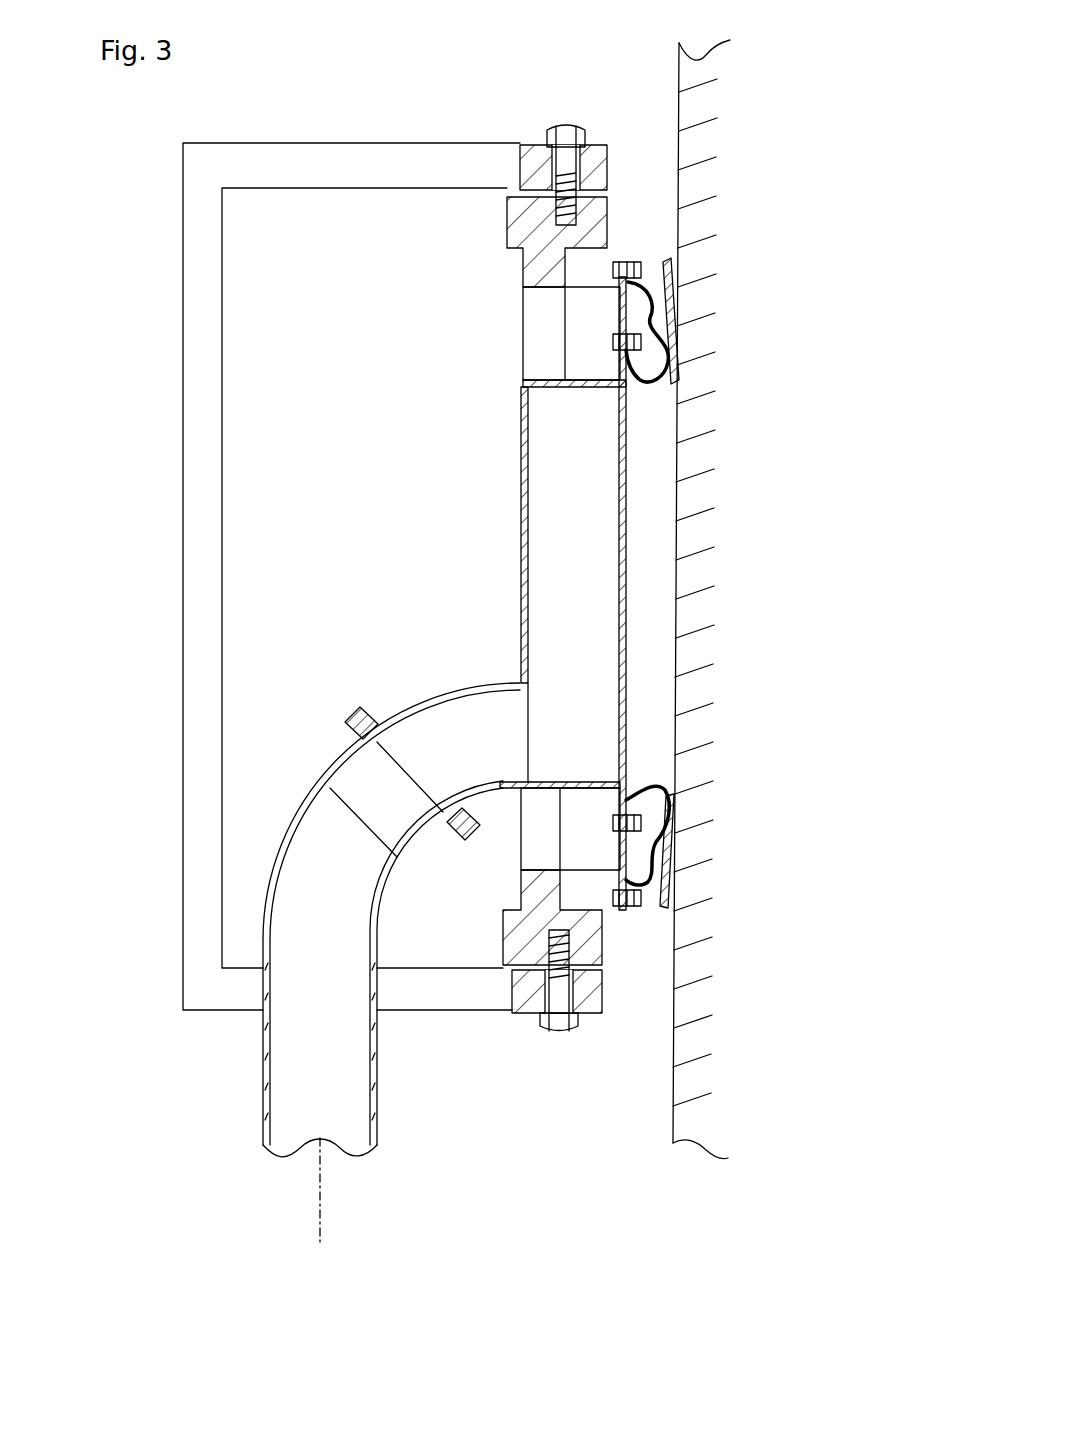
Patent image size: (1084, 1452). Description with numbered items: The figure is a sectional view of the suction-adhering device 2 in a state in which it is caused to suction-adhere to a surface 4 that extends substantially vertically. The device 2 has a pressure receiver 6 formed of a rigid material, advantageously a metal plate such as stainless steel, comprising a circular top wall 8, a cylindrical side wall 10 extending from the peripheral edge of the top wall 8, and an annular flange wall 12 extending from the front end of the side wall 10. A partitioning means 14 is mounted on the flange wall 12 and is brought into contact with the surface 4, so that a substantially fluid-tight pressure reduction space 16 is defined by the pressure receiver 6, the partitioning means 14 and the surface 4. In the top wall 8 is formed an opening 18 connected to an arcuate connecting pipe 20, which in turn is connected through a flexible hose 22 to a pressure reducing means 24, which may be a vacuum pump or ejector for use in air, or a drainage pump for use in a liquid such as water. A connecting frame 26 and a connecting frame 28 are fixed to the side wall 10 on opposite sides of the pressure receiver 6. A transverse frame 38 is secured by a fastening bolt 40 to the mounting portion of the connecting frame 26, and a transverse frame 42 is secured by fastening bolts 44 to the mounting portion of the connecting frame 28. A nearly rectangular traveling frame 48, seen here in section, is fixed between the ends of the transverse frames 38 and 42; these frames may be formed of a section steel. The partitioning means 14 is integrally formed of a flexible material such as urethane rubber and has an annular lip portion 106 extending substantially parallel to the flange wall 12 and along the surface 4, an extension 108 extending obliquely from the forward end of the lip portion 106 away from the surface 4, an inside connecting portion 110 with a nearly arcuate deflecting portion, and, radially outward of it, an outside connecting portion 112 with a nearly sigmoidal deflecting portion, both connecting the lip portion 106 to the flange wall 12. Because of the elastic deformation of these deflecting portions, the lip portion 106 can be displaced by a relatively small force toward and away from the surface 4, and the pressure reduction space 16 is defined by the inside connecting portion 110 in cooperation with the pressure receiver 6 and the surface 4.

The device 2 is at (340, 664).
The surface 4 is at (679, 62).
The pressure receiver 6 is at (536, 593).
The top wall 8 is at (521, 541).
The side wall 10 is at (576, 388).
The flange wall 12 is at (620, 323).
The partitioning means 14 is at (698, 497).
The pressure reduction space 16 is at (660, 528).
The opening 18 is at (522, 715).
The connecting pipe 20 is at (422, 702).
The flexible hose 22 is at (263, 1105).
The pressure reducing means 24 is at (337, 1290).
The connecting frame 26 is at (520, 263).
The connecting frame 28 is at (515, 860).
The transverse frame 38 is at (535, 147).
The fastening bolt 40 is at (566, 125).
The transverse frame 42 is at (532, 1005).
The fastening bolts 44 is at (562, 1028).
The traveling frame 48 is at (183, 410).
The lip portion 106 is at (676, 292).
The extension 108 is at (652, 280).
The inside connecting portion 110 is at (668, 382).
The outside connecting portion 112 is at (649, 280).